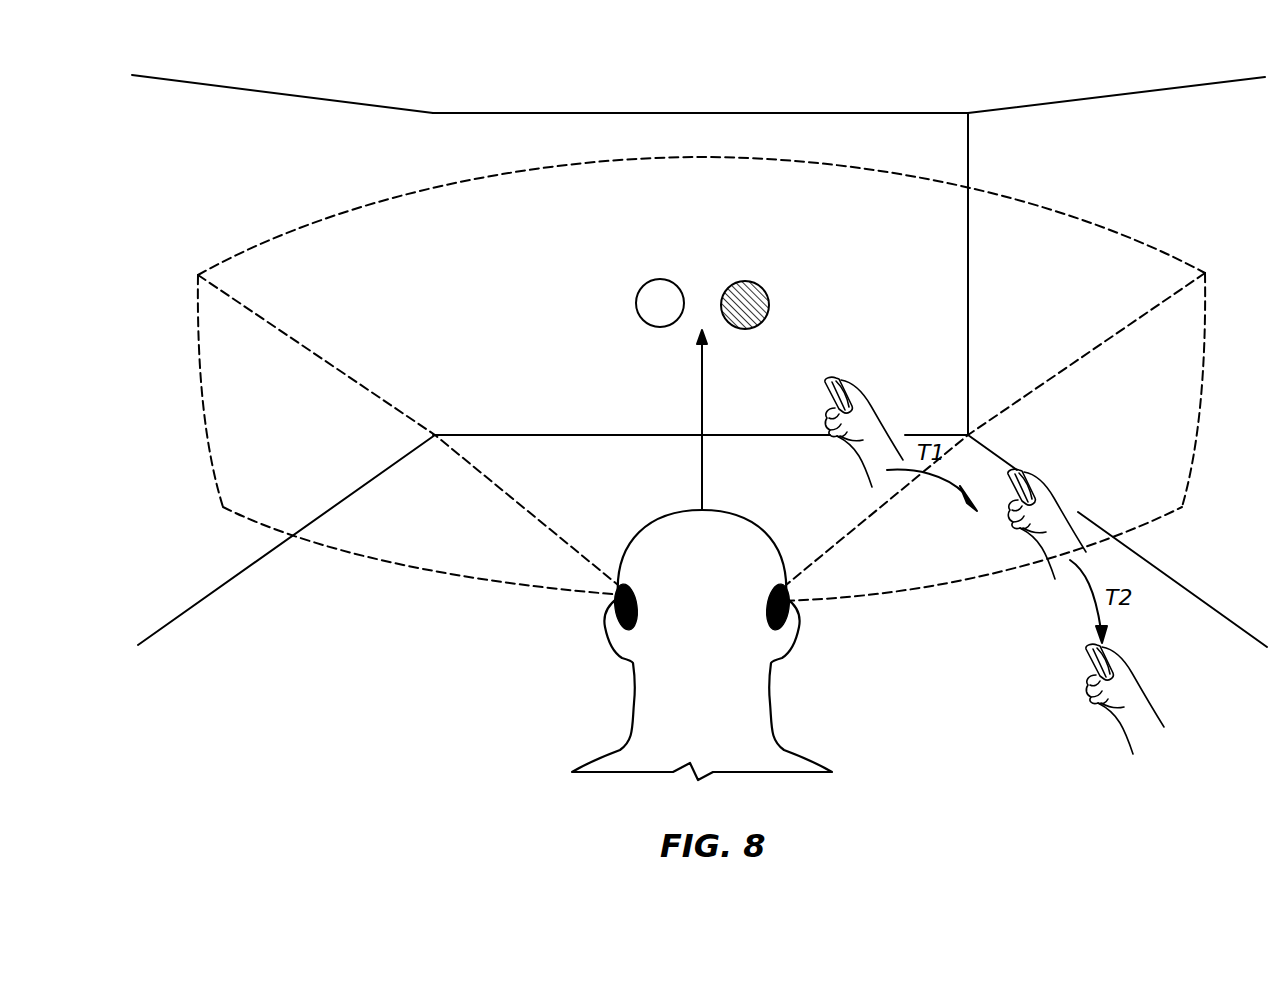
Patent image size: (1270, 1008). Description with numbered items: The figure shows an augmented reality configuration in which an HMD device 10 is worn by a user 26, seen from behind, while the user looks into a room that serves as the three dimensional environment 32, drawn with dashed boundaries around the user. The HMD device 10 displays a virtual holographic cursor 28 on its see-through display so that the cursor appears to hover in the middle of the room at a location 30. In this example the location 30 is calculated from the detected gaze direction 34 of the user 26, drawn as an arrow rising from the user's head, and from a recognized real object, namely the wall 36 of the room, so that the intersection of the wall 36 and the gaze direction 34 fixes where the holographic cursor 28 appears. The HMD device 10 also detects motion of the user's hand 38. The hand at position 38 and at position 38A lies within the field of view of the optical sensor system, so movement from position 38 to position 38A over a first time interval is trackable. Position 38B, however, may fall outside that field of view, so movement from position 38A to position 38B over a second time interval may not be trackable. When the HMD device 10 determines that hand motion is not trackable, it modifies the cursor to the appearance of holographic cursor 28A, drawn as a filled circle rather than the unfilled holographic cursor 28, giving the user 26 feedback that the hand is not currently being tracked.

The HMD device 10 is at (627, 618).
The user 26 is at (686, 629).
The holographic cursor 28 is at (650, 284).
The holographic cursor with modified visual appearance 28A is at (768, 305).
The location 30 is at (716, 266).
The three dimensional environment 32 is at (1056, 169).
The detected gaze direction 34 is at (701, 378).
The wall 36 is at (686, 145).
The hand 38 is at (863, 406).
The hand position 38A is at (1043, 493).
The hand position 38B is at (1135, 682).